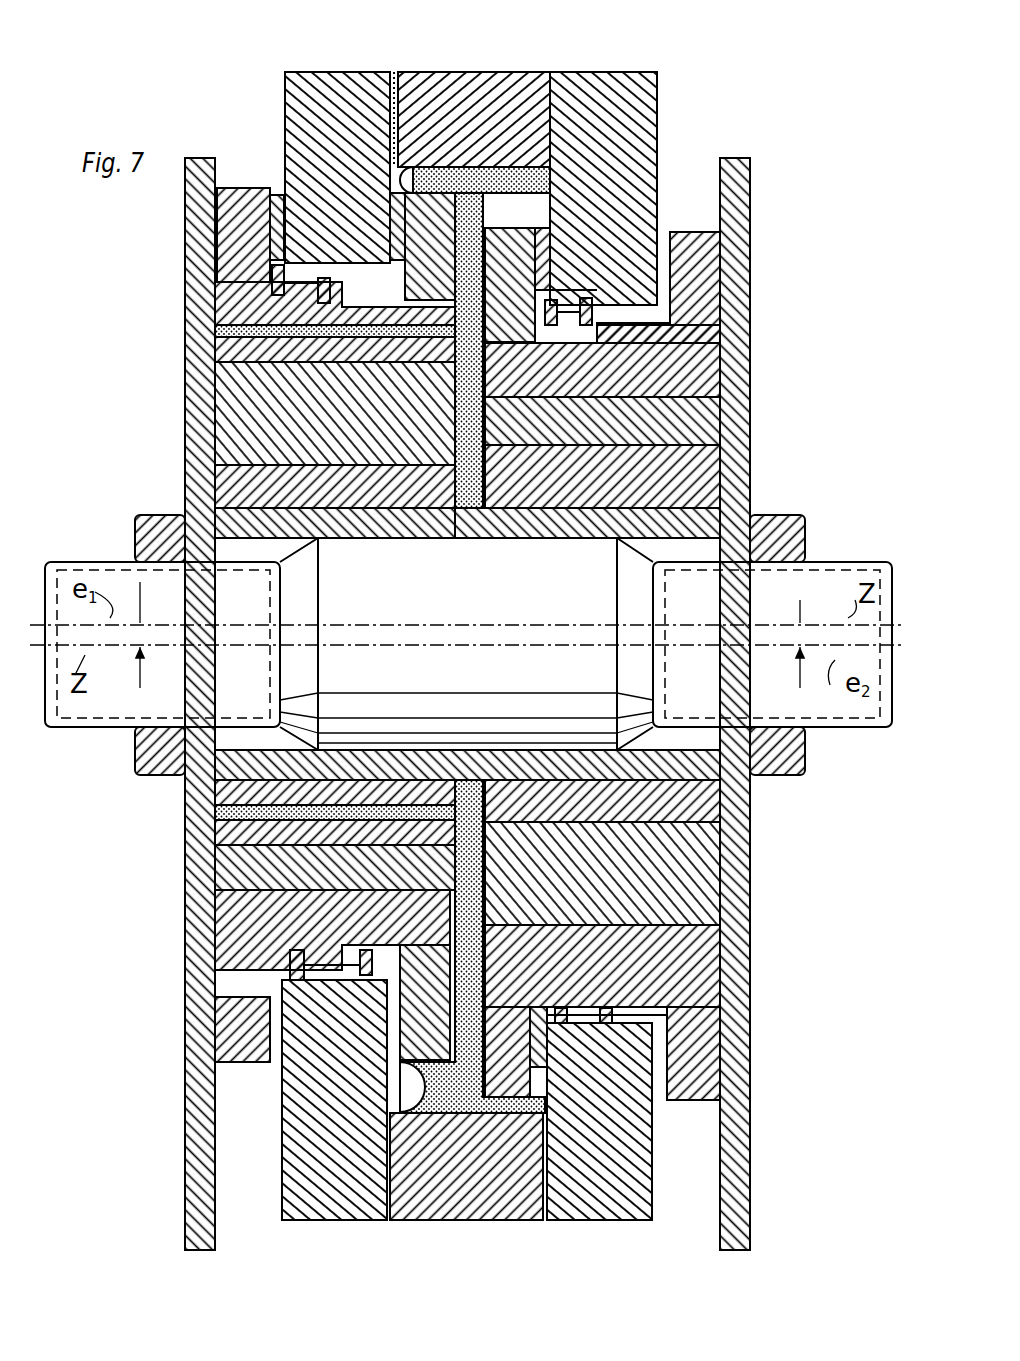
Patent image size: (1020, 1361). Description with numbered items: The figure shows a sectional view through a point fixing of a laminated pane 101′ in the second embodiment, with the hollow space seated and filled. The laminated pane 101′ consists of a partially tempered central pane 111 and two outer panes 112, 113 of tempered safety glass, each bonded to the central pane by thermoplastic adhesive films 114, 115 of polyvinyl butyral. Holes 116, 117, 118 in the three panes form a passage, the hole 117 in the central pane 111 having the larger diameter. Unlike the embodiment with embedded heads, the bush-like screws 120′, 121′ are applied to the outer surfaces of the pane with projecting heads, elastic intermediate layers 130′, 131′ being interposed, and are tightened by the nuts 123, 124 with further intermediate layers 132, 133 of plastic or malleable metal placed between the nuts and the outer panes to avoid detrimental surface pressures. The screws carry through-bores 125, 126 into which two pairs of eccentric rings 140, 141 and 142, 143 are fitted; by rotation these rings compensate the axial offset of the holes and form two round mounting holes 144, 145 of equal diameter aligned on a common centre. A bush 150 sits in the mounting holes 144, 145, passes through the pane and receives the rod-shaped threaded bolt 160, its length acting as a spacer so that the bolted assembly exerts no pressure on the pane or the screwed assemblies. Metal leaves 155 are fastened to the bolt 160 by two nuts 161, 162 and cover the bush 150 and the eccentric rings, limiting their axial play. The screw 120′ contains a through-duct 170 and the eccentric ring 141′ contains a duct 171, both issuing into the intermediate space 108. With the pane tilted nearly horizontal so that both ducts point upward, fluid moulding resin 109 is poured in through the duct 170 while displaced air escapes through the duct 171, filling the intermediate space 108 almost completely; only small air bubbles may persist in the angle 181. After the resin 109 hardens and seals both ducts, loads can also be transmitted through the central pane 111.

The laminated pane 101′ is at (250, 93).
The intermediate space 108 is at (470, 1100).
The moulding resin 109 is at (445, 1100).
The central pane 111 is at (478, 72).
The outer pane 112 is at (300, 126).
The outer pane 113 is at (615, 126).
The thermoplastic adhesive film 114 is at (393, 72).
The thermoplastic adhesive film 115 is at (552, 72).
The hole 116 is at (310, 290).
The hole 117 is at (545, 180).
The hole 118 is at (590, 320).
The screw 120′ is at (245, 300).
The screw 121′ is at (700, 953).
The nut 123 is at (420, 1033).
The nut 124 is at (520, 1003).
The through-bore 125 is at (270, 365).
The through-bore 126 is at (690, 406).
The elastic intermediate layer 130′ is at (245, 1003).
The elastic intermediate layer 131′ is at (680, 1058).
The intermediate layer 132 is at (385, 1020).
The intermediate layer 133 is at (590, 1097).
The eccentric ring 140 is at (235, 416).
The eccentric ring 141 is at (240, 830).
The eccentric ring 141′ is at (235, 480).
The eccentric ring 142 is at (700, 428).
The eccentric ring 143 is at (690, 480).
The mounting hole 144 is at (342, 520).
The mounting hole 145 is at (605, 520).
The bush 150 is at (470, 520).
The metal leaf 155 is at (195, 1233).
The threaded bolt 160 is at (480, 680).
The nut 161 is at (150, 758).
The nut 162 is at (785, 770).
The through-duct 170 is at (240, 332).
The duct 171 is at (230, 810).
The angle 181 is at (400, 180).